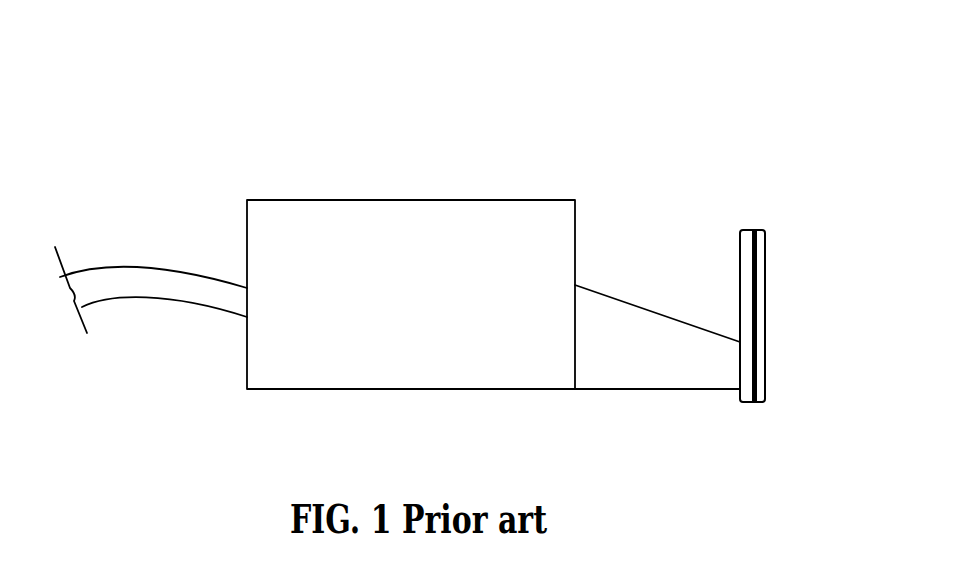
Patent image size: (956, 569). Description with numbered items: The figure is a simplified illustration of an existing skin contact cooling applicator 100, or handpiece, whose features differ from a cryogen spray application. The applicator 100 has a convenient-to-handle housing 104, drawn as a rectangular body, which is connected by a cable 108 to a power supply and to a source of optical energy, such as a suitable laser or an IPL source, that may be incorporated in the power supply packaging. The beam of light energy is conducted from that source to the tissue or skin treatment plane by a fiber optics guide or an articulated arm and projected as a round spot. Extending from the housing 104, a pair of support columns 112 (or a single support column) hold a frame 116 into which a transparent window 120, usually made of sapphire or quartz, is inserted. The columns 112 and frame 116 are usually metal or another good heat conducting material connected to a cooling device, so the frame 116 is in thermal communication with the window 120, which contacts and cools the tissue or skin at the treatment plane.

The applicator 100 is at (533, 82).
The housing 104 is at (404, 200).
The cable 108 is at (152, 265).
The support columns 112 is at (640, 306).
The frame 116 is at (740, 252).
The transparent window 120 is at (760, 402).